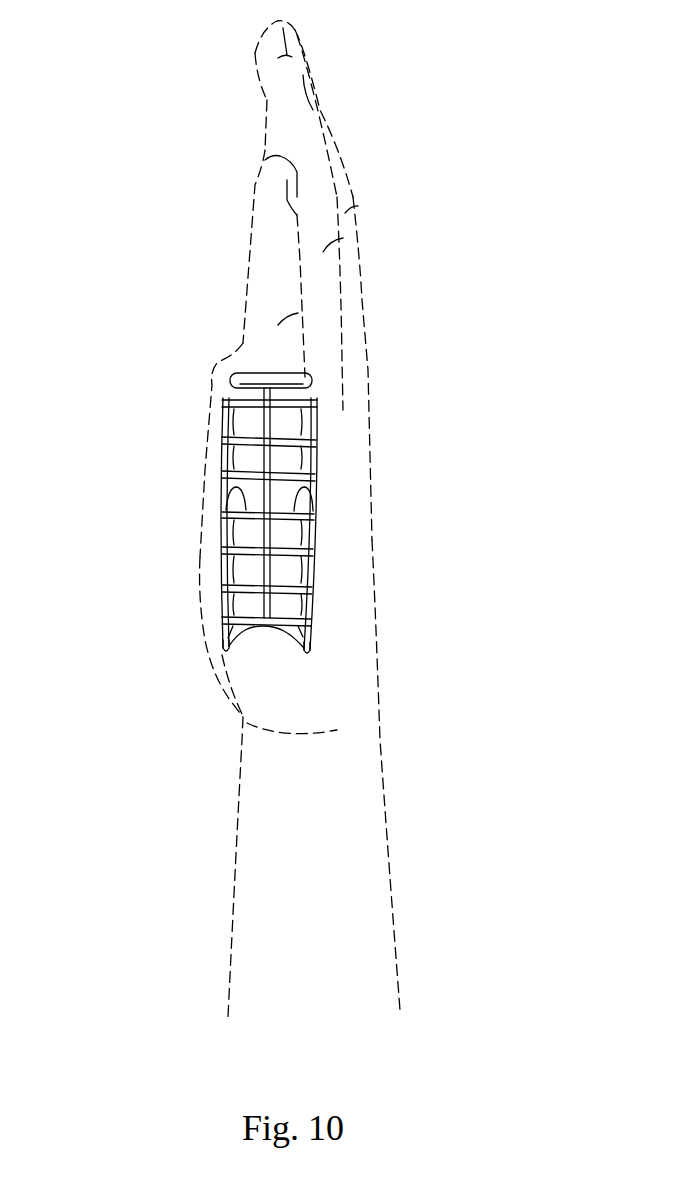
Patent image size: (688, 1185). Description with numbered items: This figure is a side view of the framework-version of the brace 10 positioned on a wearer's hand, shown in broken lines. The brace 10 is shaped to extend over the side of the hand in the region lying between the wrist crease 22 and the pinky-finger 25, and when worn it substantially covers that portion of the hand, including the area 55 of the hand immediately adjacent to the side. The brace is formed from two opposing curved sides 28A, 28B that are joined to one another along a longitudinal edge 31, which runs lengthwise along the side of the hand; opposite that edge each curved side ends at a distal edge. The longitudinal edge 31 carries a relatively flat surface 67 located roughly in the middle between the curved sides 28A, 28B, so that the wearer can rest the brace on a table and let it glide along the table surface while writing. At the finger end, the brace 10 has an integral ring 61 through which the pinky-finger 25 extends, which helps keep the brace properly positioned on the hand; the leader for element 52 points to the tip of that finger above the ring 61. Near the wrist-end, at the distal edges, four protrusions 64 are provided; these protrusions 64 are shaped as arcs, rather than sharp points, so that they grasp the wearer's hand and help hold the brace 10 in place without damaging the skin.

The brace 10 is at (271, 517).
The wrist crease 22 is at (280, 735).
The pinky-finger 25 is at (250, 212).
The fingertip 52 is at (265, 100).
The upper strap section 55 is at (242, 418).
The longitudinal edge 31 is at (228, 465).
The relatively flat surface 67 is at (312, 422).
The ring 61 is at (312, 383).
The curved side 28A is at (226, 490).
The curved side 28B is at (302, 488).
The protrusions 64 is at (232, 570).